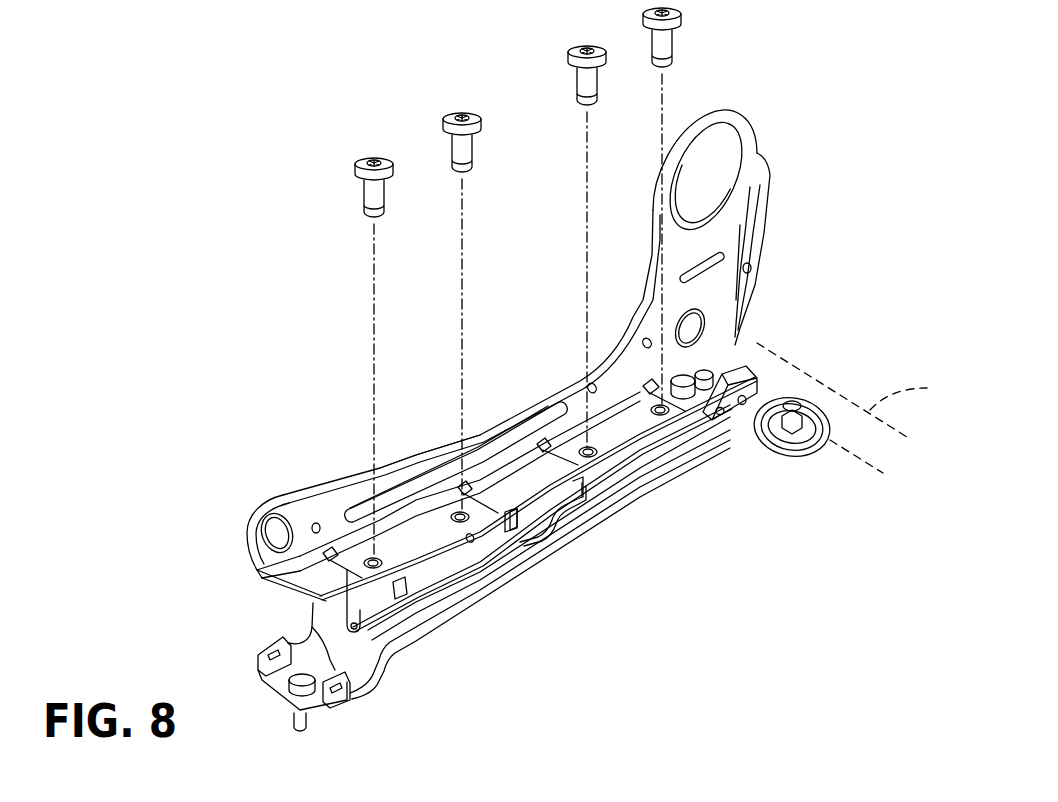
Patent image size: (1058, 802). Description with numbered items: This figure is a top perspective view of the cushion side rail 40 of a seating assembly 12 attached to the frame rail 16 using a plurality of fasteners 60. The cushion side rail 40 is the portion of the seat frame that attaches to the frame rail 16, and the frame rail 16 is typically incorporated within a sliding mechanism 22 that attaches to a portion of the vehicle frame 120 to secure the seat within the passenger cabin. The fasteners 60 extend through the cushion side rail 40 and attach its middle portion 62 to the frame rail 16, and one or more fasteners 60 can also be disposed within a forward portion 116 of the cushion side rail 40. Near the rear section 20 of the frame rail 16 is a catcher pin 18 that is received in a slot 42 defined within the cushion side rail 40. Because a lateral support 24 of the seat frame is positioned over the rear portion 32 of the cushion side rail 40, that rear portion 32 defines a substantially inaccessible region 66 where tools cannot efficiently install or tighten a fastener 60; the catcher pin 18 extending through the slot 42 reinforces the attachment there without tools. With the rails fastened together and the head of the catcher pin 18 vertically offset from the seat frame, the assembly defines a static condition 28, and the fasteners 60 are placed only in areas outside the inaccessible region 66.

The seating assembly 12 is at (438, 405).
The frame rail 16 is at (593, 516).
The catcher pin 18 is at (745, 380).
The rear section 20 is at (740, 385).
The sliding mechanism 22 is at (405, 620).
The lateral support 24 is at (857, 408).
The static condition 28 is at (718, 483).
The rear portion 32 is at (712, 340).
The cushion side rail 40 is at (515, 392).
The slot 42 is at (712, 268).
The fasteners 60 is at (372, 198).
The middle portion 62 is at (507, 487).
The substantially inaccessible region 66 is at (716, 358).
The forward portion 116 is at (252, 560).
The vehicle frame 120 is at (370, 678).